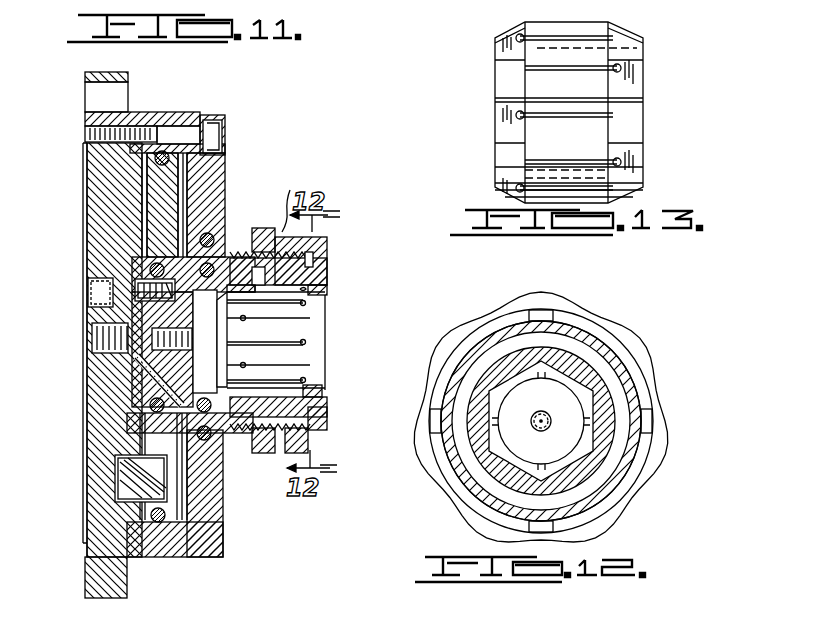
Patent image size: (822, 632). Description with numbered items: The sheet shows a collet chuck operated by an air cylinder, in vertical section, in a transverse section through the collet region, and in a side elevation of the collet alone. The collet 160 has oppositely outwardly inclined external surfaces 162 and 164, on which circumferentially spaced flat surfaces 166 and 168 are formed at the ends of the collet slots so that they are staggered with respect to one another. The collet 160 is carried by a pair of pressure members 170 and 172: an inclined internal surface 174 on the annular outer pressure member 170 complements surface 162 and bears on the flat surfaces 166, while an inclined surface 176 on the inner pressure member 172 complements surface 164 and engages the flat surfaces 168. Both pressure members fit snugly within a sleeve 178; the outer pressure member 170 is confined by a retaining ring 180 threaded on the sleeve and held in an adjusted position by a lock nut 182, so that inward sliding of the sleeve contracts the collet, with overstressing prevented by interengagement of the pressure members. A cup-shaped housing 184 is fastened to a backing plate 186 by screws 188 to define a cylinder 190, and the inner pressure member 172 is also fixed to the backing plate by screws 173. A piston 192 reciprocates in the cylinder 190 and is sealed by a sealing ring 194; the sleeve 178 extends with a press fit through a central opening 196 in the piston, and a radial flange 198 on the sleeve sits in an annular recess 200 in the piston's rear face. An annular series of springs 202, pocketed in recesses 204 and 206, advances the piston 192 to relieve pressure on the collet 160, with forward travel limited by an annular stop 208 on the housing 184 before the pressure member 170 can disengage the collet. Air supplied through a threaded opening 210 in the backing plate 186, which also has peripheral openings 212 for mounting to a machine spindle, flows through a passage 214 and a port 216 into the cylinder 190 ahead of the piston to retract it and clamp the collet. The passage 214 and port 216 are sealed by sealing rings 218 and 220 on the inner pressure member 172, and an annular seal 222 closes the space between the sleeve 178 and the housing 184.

In FIG. 11, the collet 160 is at (325, 343).
In FIG. 13, the collet 160 is at (646, 126).
In FIG. 12, the collet 160 is at (483, 433).
In FIG. 11, the external surface 162 is at (322, 393).
In FIG. 13, the external surface 162 is at (633, 100).
In FIG. 12, the external surface 162 is at (585, 397).
In FIG. 13, the external surface 164 is at (505, 85).
In FIG. 13, the flat surfaces 166 is at (642, 148).
In FIG. 12, the flat surfaces 166 is at (595, 430).
In FIG. 13, the flat surfaces 168 is at (500, 118).
In FIG. 11, the pressure member 170 is at (298, 274).
In FIG. 12, the pressure member 170 is at (570, 368).
In FIG. 11, the pressure member 172 is at (135, 279).
In FIG. 11, the set screw 173 is at (88, 292).
In FIG. 11, the inclined internal surface 174 is at (328, 290).
In FIG. 12, the inclined internal surface 174 is at (593, 413).
In FIG. 11, the inclined surface 176 is at (243, 420).
In FIG. 11, the sleeve 178 is at (230, 255).
In FIG. 12, the sleeve 178 is at (613, 455).
In FIG. 11, the retaining ring 180 is at (325, 238).
In FIG. 12, the retaining ring 180 is at (593, 510).
In FIG. 11, the lock nut 182 is at (304, 203).
In FIG. 11, the housing 184 is at (225, 163).
In FIG. 12, the housing 184 is at (640, 480).
In FIG. 11, the backing plate 186 is at (92, 193).
In FIG. 11, the screws 188 is at (188, 125).
In FIG. 11, the cylinder 190 is at (225, 155).
In FIG. 11, the piston 192 is at (190, 187).
In FIG. 11, the sealing ring 194 is at (207, 128).
In FIG. 11, the central opening 196 is at (162, 207).
In FIG. 11, the radial flange 198 is at (135, 247).
In FIG. 11, the annular recess 200 is at (140, 425).
In FIG. 11, the springs 202 is at (118, 473).
In FIG. 11, the recess 204 is at (118, 496).
In FIG. 11, the recess 206 is at (165, 490).
In FIG. 11, the annular stop 208 is at (178, 530).
In FIG. 11, the threaded opening 210 is at (96, 340).
In FIG. 11, the peripheral openings 212 is at (115, 95).
In FIG. 11, the passage 214 is at (145, 372).
In FIG. 11, the port 216 is at (171, 349).
In FIG. 11, the sealing ring 218 is at (150, 408).
In FIG. 11, the sealing ring 220 is at (205, 400).
In FIG. 11, the annular seal 222 is at (207, 440).